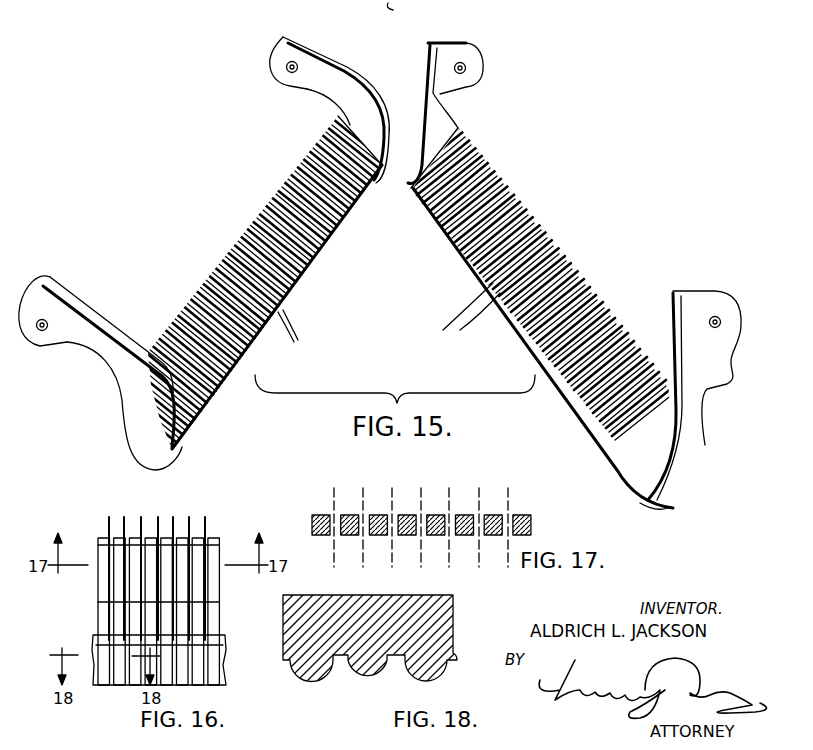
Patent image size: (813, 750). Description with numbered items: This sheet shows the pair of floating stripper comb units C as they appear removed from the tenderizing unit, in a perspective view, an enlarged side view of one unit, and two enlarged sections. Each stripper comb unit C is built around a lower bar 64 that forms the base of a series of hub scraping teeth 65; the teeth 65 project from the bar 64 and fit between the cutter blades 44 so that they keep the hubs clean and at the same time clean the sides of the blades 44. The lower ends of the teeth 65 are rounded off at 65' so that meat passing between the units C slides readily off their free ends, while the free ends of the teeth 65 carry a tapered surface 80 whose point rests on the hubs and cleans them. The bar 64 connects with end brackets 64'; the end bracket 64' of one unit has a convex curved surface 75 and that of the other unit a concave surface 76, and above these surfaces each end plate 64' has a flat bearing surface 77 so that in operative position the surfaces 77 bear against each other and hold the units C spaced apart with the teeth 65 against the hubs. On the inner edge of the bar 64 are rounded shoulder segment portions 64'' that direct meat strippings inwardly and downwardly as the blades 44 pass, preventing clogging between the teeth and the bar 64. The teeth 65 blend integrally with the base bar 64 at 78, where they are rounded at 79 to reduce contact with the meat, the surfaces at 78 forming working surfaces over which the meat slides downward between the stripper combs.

In FIG. 16, the cutter blades 44 is at (205, 527).
In FIG. 17, the cutter blades 44 is at (330, 490).
In FIG. 15, the bar 64 is at (422, 257).
In FIG. 16, the bar 64 is at (139, 649).
In FIG. 18, the bar 64 is at (325, 637).
In FIG. 15, the end bracket 64' is at (393, 248).
In FIG. 15, the rounded shoulder segment portions 64'' is at (440, 347).
In FIG. 16, the rounded shoulder segment portions 64'' is at (239, 617).
In FIG. 15, the teeth 65 is at (370, 248).
In FIG. 16, the teeth 65 is at (158, 591).
In FIG. 17, the teeth 65 is at (421, 500).
In FIG. 15, the rounded lower ends of teeth 65' is at (389, 322).
In FIG. 15, the convex curved surface 75 is at (368, 91).
In FIG. 15, the concave surface 76 is at (428, 128).
In FIG. 15, the flat bearing surface 77 is at (310, 55).
In FIG. 15, the blend of teeth with base bar 78 is at (230, 383).
In FIG. 18, the blend of teeth with base bar 78 is at (340, 660).
In FIG. 16, the rounded portion of teeth 79 is at (127, 670).
In FIG. 18, the rounded portion of teeth 79 is at (395, 660).
In FIG. 15, the tapered surface 80 is at (218, 266).
In FIG. 16, the tapered surface 80 is at (102, 538).
In FIG. 17, the tapered surface 80 is at (421, 527).
In FIG. 15, the floating stripper comb units C is at (658, 533).
In FIG. 17, the floating stripper comb units C is at (527, 515).